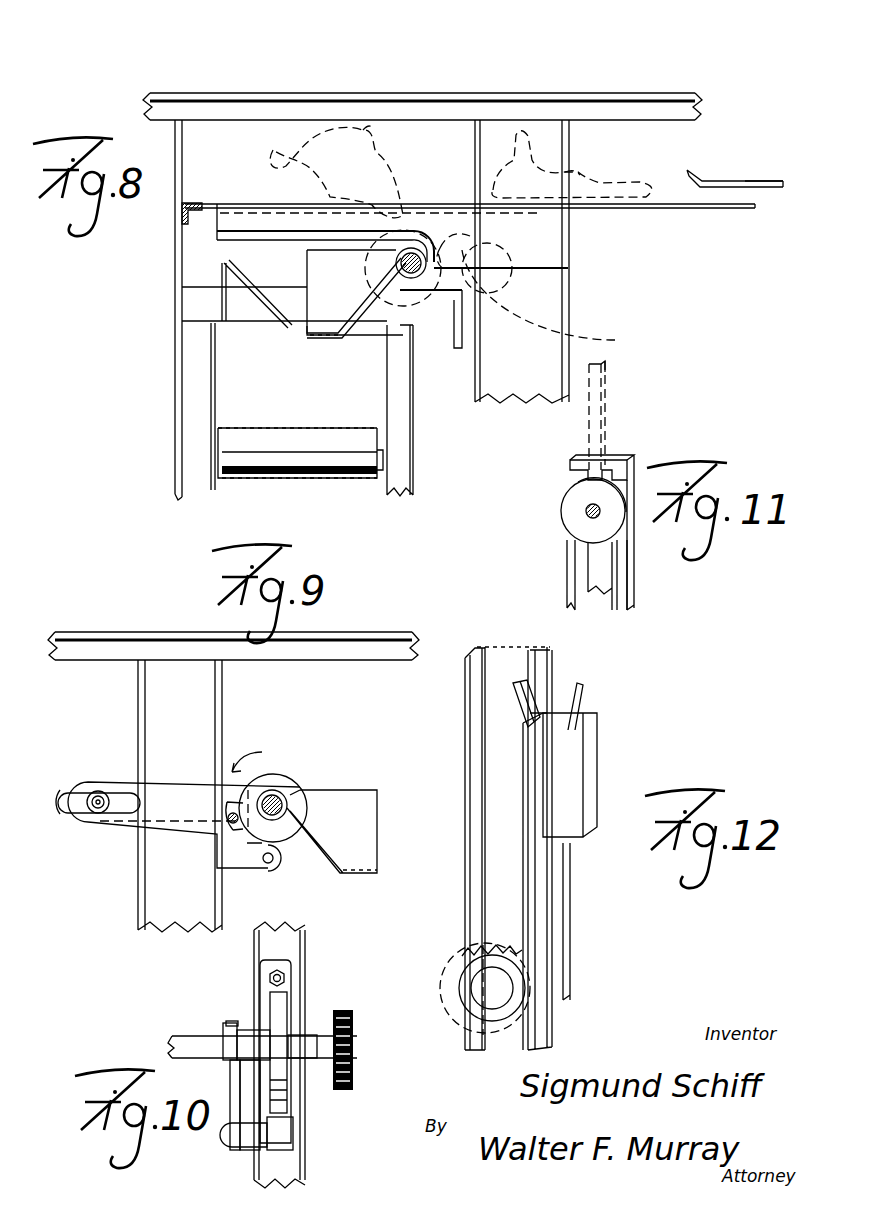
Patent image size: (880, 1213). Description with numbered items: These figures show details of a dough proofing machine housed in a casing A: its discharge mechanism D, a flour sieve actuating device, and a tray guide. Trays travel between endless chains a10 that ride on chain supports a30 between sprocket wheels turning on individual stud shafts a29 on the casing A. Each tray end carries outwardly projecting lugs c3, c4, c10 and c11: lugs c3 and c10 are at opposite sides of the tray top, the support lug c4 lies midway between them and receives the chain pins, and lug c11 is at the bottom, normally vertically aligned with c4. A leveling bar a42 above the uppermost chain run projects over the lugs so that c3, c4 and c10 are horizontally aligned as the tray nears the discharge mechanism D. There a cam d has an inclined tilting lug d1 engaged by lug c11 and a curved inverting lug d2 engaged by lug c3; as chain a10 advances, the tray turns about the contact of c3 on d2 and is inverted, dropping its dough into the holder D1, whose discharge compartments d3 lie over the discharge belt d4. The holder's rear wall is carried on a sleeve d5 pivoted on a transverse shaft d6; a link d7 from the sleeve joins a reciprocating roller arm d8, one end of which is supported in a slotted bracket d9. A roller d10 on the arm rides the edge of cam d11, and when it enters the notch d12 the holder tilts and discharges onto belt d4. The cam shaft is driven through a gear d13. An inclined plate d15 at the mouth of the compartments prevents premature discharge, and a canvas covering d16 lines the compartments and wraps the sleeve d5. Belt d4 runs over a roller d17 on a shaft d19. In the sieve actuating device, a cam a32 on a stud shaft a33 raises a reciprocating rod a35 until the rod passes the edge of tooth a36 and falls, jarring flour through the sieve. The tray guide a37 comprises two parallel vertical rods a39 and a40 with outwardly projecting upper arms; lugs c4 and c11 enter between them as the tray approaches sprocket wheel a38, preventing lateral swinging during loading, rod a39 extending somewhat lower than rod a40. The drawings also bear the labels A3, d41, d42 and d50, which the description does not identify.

In FIG. 8, the casing A is at (175, 110).
In FIG. 8, the frame post A3 is at (396, 484).
In FIG. 11, the frame post A3 is at (624, 580).
In FIG. 9, the frame post A3 is at (183, 680).
In FIG. 12, the frame post A3 is at (540, 667).
In FIG. 8, the discharge device D is at (314, 58).
In FIG. 9, the discharge device D is at (35, 892).
In FIG. 8, the holder D1 is at (187, 215).
In FIG. 9, the holder D1 is at (360, 810).
In FIG. 8, the lug c10 is at (274, 155).
In FIG. 8, the lug c11 is at (360, 130).
In FIG. 8, the lug c3 is at (497, 185).
In FIG. 8, the support lug c4 is at (575, 180).
In FIG. 8, the endless chains a10 is at (710, 196).
In FIG. 8, the leveling bar a42 is at (746, 181).
In FIG. 8, the chain supports a30 is at (733, 209).
In FIG. 11, the rod a35 is at (608, 405).
In FIG. 11, the tooth a36 is at (630, 535).
In FIG. 11, the cam a32 is at (580, 530).
In FIG. 11, the stud shaft a33 is at (586, 513).
In FIG. 12, the rod a40 is at (533, 750).
In FIG. 12, the tray guide a37 is at (582, 773).
In FIG. 12, the rod a39 is at (562, 862).
In FIG. 12, the sprocket wheel a38 is at (470, 958).
In FIG. 12, the stud shafts a29 is at (495, 988).
In FIG. 8, the cam d is at (527, 253).
In FIG. 8, the tilting lug d1 is at (508, 230).
In FIG. 8, the inverting lug d2 is at (450, 232).
In FIG. 8, the discharge compartments d3 is at (323, 283).
In FIG. 9, the discharge compartments d3 is at (357, 857).
In FIG. 8, the discharge belt d4 is at (233, 427).
In FIG. 8, the sleeve d5 is at (414, 278).
In FIG. 9, the sleeve d5 is at (276, 790).
In FIG. 10, the sleeve d5 is at (198, 1043).
In FIG. 8, the transverse shaft d6 is at (421, 275).
In FIG. 9, the transverse shaft d6 is at (281, 792).
In FIG. 10, the transverse shaft d6 is at (172, 1048).
In FIG. 9, the link d7 is at (253, 805).
In FIG. 10, the link d7 is at (223, 1025).
In FIG. 9, the reciprocating roller arm d8 is at (197, 810).
In FIG. 10, the reciprocating roller arm d8 is at (237, 1088).
In FIG. 9, the slotted bracket d9 is at (73, 793).
In FIG. 9, the roller d10 is at (278, 871).
In FIG. 10, the roller d10 is at (293, 1140).
In FIG. 9, the cam d11 is at (303, 788).
In FIG. 10, the cam d11 is at (277, 1003).
In FIG. 9, the notch d12 is at (273, 790).
In FIG. 8, the gear d13 is at (385, 318).
In FIG. 10, the gear d13 is at (353, 1030).
In FIG. 8, the inclined plate d15 is at (253, 305).
In FIG. 8, the canvas covering d16 is at (303, 328).
In FIG. 8, the roller d17 is at (243, 438).
In FIG. 8, the shaft d19 is at (220, 463).
In FIG. 9, the pin d41 is at (98, 796).
In FIG. 9, the slot d42 is at (100, 810).
In FIG. 8, the arc path d50 is at (592, 348).